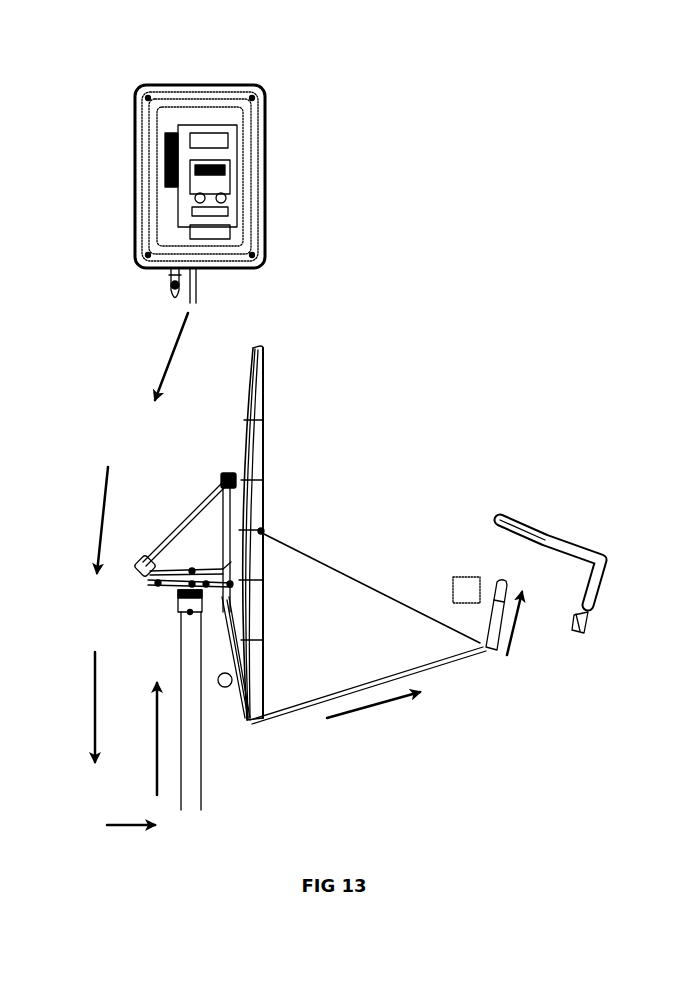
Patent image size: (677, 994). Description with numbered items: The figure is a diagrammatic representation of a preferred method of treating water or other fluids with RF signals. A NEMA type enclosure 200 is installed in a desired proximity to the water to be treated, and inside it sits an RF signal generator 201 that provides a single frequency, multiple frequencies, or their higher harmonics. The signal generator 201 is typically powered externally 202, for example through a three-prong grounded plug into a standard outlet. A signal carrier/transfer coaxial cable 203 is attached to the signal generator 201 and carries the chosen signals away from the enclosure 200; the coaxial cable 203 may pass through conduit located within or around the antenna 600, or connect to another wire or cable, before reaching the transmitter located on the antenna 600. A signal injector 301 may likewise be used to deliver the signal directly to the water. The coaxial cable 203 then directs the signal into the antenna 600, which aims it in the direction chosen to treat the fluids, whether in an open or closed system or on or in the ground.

The NEMA type enclosure 200 is at (203, 85).
The RF signal generator 201 is at (212, 155).
The external power 202 is at (165, 293).
The signal carrier/transfer coaxial cable 203 is at (200, 290).
The RF signal injector 301 is at (477, 590).
The antenna 600 is at (268, 735).